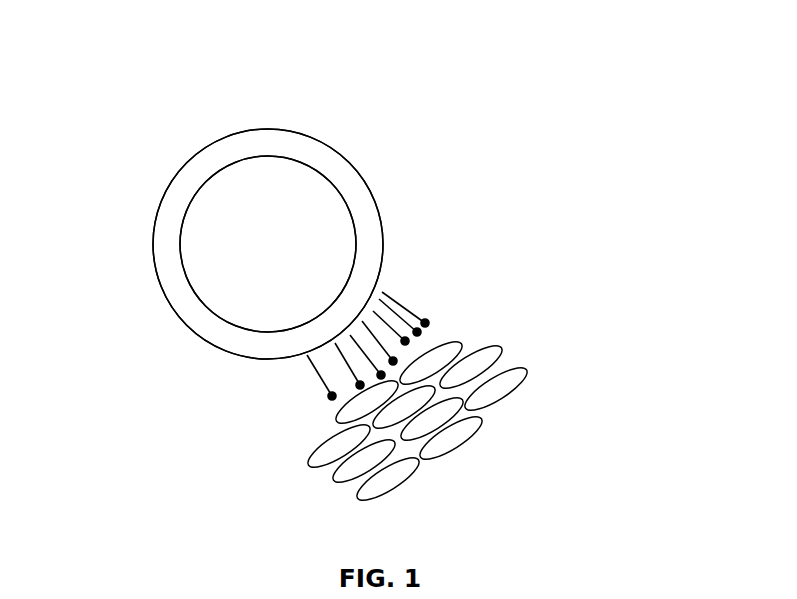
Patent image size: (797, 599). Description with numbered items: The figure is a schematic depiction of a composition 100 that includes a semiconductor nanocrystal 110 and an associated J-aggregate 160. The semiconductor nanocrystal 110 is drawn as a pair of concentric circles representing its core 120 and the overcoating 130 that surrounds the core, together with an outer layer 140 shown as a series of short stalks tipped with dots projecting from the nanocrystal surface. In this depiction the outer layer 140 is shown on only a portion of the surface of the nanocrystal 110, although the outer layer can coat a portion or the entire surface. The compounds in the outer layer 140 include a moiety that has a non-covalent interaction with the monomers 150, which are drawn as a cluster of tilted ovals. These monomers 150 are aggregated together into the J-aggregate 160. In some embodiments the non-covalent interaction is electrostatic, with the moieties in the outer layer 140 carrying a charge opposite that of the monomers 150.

The composition 100 is at (138, 83).
The semiconductor nanocrystal 110 is at (247, 128).
The core 120 is at (273, 180).
The overcoating 130 is at (318, 158).
The outer layer 140 is at (402, 298).
The monomers 150 is at (450, 438).
The J-aggregate 160 is at (498, 401).